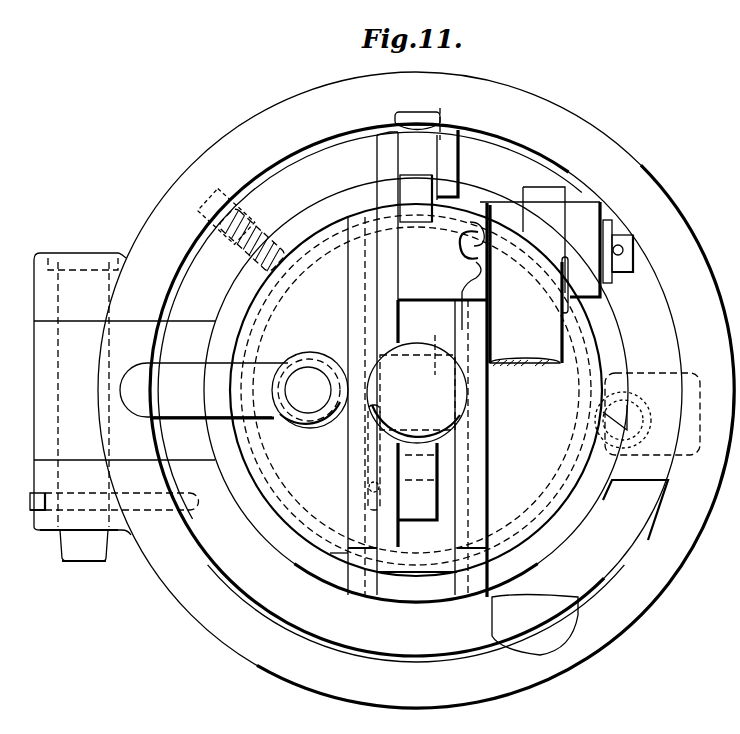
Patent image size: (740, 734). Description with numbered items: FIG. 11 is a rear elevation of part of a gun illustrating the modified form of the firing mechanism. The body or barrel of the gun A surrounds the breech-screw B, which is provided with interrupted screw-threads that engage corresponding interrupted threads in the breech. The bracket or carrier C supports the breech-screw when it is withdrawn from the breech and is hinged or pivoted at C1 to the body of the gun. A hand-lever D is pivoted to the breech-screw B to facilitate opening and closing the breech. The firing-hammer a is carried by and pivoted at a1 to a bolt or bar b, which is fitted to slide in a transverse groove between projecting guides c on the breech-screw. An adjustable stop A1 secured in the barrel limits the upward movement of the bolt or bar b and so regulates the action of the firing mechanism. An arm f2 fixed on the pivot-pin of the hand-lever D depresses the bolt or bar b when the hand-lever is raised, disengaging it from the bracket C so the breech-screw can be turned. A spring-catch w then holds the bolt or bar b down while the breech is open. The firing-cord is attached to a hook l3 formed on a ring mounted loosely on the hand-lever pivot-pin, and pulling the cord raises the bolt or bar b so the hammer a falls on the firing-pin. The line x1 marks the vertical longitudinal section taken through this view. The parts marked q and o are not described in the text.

The body or barrel of the gun A is at (416, 390).
The adjustable stop A1 is at (398, 118).
The section line x' x' x1 is at (443, 241).
The bracket or carrier C is at (433, 390).
The hinge or pivot of the bracket C1 is at (189, 407).
The breech-screw B is at (416, 390).
The bolt or bar b is at (408, 363).
The arm f2 is at (416, 198).
The hook l3 is at (482, 272).
The hand-lever D is at (648, 250).
The firing-hammer a is at (417, 393).
The pivot of the hammer a1 is at (430, 423).
The latch q is at (647, 414).
The projecting guides c is at (357, 468).
The spring-catch w is at (372, 488).
The slot o is at (469, 447).